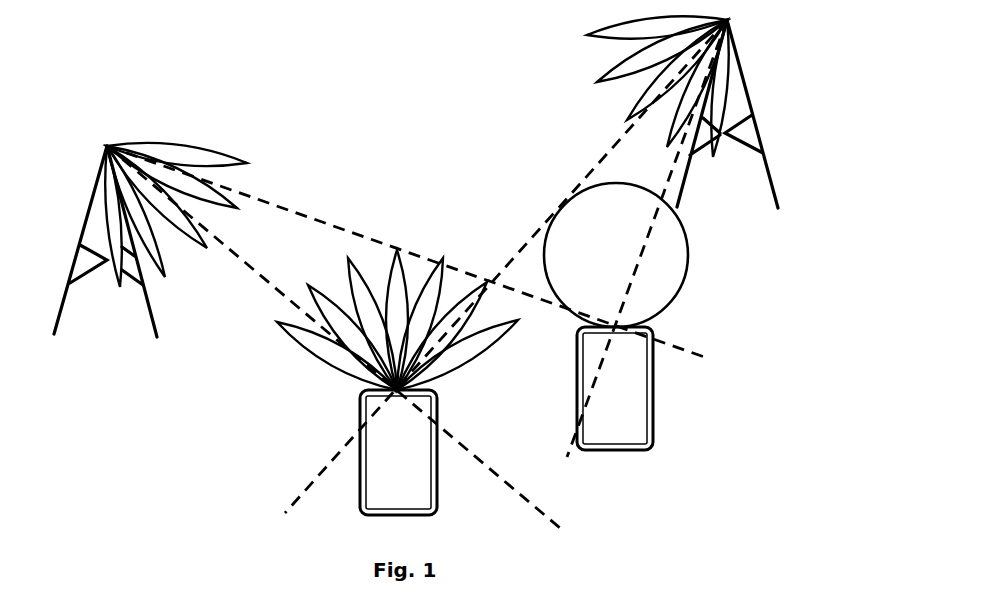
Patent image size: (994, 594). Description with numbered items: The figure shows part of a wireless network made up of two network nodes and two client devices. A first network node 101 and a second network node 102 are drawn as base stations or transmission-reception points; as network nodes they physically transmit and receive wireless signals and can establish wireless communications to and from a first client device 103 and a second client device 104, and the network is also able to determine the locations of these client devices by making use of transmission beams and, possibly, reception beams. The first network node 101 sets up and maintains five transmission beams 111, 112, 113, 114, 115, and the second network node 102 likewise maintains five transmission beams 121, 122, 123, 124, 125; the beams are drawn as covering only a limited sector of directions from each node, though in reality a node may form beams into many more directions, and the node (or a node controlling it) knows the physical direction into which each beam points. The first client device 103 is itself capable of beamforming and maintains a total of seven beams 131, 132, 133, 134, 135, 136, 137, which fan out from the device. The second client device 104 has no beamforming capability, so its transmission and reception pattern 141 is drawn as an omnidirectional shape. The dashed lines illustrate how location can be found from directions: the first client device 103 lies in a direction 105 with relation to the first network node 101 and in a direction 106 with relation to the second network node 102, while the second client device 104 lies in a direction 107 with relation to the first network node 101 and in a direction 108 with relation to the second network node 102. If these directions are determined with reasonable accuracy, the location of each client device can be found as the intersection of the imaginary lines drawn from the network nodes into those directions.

The first network node 101 is at (54, 334).
The second network node 102 is at (778, 208).
The first client device 103 is at (360, 505).
The second client device 104 is at (653, 415).
The direction 105 is at (545, 515).
The direction 106 is at (297, 498).
The direction 107 is at (707, 358).
The direction 108 is at (573, 437).
The transmission beam 111 is at (120, 287).
The transmission beam 112 is at (165, 277).
The transmission beam 113 is at (207, 248).
The transmission beam 114 is at (237, 208).
The transmission beam 115 is at (247, 163).
The transmission beam 121 is at (709, 162).
The transmission beam 122 is at (667, 147).
The transmission beam 123 is at (627, 120).
The transmission beam 124 is at (597, 82).
The transmission beam 125 is at (587, 35).
The beam 131 is at (277, 322).
The beam 132 is at (308, 285).
The beam 133 is at (348, 258).
The beam 134 is at (397, 250).
The beam 135 is at (443, 258).
The beam 136 is at (487, 282).
The beam 137 is at (518, 320).
The transmission and reception pattern 141 is at (683, 285).